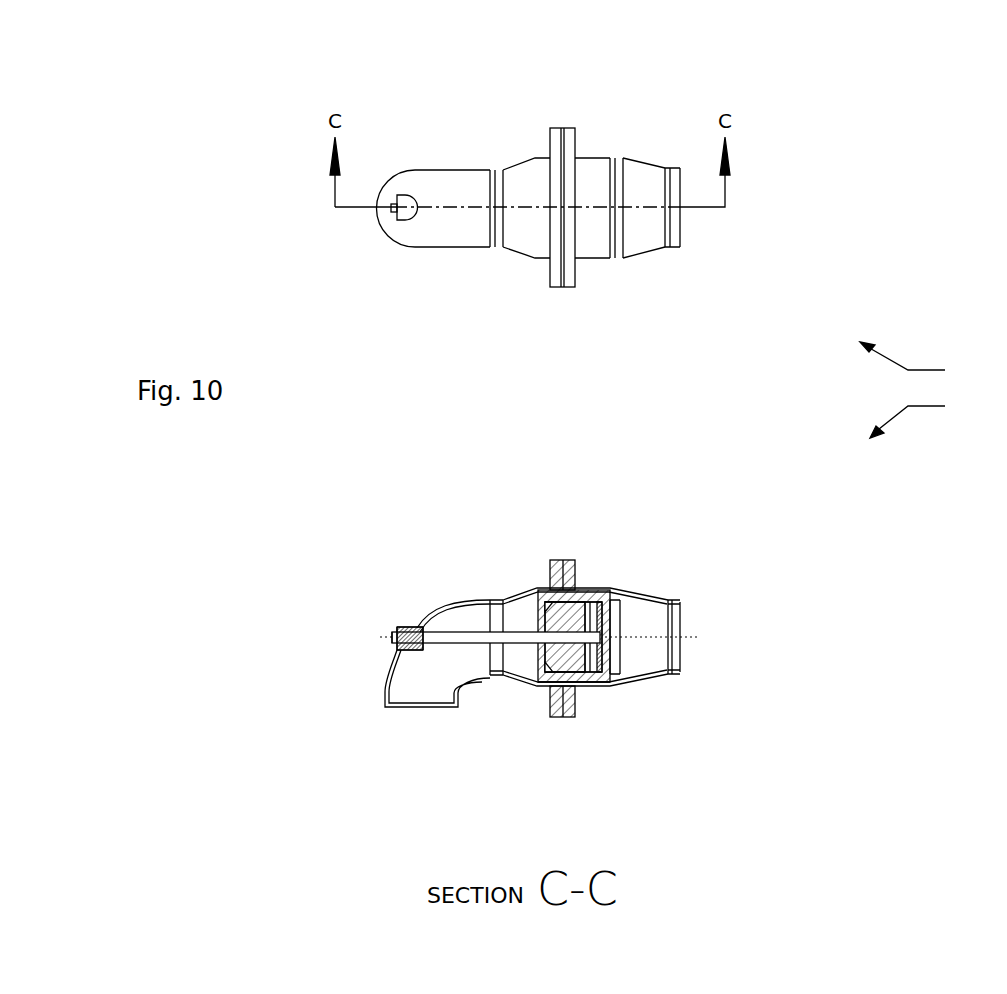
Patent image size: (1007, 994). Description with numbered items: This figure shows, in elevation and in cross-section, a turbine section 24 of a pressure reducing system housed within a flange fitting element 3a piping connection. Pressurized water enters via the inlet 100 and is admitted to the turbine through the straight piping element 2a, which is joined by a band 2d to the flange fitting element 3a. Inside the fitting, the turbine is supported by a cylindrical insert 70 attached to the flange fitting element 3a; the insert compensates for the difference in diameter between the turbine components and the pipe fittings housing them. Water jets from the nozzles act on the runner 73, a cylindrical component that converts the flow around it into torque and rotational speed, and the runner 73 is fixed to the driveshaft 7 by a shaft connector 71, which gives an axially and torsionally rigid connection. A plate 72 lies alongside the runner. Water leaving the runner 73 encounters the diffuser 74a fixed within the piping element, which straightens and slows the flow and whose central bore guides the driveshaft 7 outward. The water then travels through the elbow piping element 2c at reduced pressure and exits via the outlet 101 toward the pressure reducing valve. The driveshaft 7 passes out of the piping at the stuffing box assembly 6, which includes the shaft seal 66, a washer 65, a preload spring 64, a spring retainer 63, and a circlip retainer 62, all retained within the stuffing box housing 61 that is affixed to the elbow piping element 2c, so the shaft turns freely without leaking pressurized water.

The straight piping element 2a is at (595, 157).
The elbow piping element 2c is at (403, 177).
The housing band 2d is at (508, 167).
The flange fitting element 3a is at (548, 273).
The stuffing box assembly 6 is at (403, 220).
The driveshaft 7 is at (392, 208).
The turbine section 24 is at (917, 390).
The stuffing box housing 61 is at (402, 629).
The circlip retainer 62 is at (397, 630).
The spring retainer 63 is at (406, 628).
The preload spring 64 is at (410, 627).
The cap element 65 is at (414, 627).
The shaft seal 66 is at (418, 627).
The cylindrical insert 70 is at (610, 600).
The shaft connector 71 is at (607, 640).
The bearing element 72 is at (607, 667).
The runner 73 is at (565, 670).
The diffuser 74a is at (582, 692).
The inlet 100 is at (640, 638).
The outlet 101 is at (423, 728).